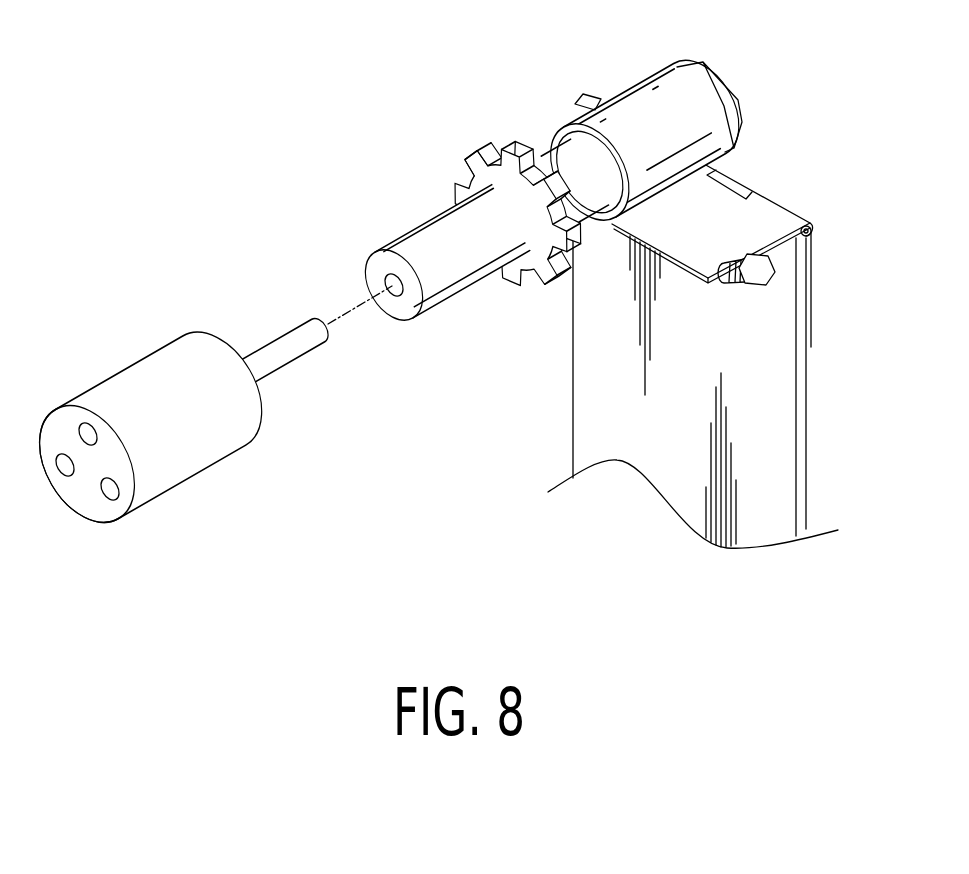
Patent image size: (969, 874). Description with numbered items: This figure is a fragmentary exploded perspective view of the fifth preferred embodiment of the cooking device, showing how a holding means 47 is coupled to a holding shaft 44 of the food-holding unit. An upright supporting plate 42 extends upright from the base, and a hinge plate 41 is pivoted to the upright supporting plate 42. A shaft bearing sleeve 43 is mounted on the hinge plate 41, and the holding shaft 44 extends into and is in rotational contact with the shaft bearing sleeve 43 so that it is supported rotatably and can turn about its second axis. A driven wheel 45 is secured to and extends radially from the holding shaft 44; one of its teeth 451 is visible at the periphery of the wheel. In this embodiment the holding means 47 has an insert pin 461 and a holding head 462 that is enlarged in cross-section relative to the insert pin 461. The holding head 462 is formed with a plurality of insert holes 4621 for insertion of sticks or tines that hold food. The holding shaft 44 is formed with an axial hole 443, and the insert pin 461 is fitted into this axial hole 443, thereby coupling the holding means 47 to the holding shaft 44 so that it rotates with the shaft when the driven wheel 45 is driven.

The hinge plate 41 is at (756, 221).
The upright supporting plate 42 is at (770, 398).
The shaft bearing sleeve 43 is at (652, 120).
The holding shaft 44 is at (481, 265).
The axial hole 443 is at (402, 290).
The driven wheel 45 is at (518, 225).
The gear tooth 451 is at (476, 156).
The insert pin 461 is at (275, 358).
The holding head 462 is at (150, 437).
The insert hole 4621 is at (66, 467).
The holding means 47 is at (206, 419).